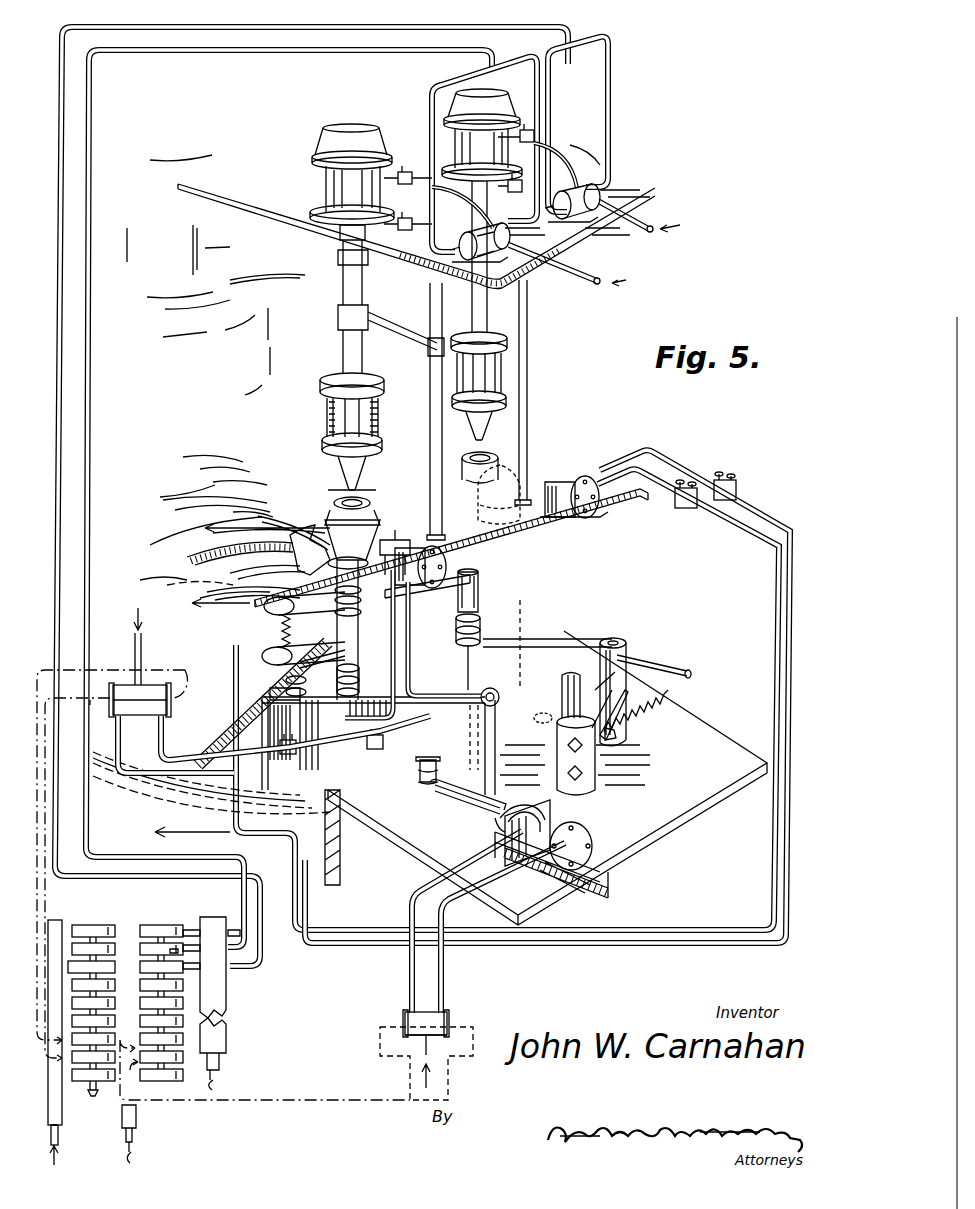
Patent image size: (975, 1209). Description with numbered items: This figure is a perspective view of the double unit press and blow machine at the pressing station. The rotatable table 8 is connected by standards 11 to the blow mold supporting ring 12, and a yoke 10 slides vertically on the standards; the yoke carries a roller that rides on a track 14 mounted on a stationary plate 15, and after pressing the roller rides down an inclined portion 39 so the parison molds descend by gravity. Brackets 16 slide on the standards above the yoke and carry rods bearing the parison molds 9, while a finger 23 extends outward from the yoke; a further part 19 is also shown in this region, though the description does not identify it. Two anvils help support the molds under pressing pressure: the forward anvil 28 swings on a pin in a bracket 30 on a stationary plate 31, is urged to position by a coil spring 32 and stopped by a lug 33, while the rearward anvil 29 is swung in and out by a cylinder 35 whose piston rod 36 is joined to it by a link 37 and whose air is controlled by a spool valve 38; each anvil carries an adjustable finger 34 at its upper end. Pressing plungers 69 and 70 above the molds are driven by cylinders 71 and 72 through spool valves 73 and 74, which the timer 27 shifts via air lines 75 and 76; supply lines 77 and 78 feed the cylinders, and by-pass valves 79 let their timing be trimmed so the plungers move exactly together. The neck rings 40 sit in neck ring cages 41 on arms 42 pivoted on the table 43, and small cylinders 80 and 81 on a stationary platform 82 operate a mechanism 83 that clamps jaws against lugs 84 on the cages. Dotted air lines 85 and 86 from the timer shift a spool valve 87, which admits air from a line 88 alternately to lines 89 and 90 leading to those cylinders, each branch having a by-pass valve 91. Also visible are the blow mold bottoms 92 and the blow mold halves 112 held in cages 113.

The table 8 is at (145, 812).
The parison molds 9 is at (312, 545).
The yoke 10 is at (389, 644).
The standards 11 is at (268, 708).
The blow mold supporting ring 12 is at (207, 582).
The track 14 is at (262, 692).
The stationary plate 15 is at (172, 780).
The brackets 16 is at (262, 606).
The spring 19 is at (278, 630).
The finger 23 is at (344, 717).
The timer 27 is at (152, 932).
The forward anvil 28 is at (588, 640).
The rearward anvil 29 is at (538, 665).
The bracket 30 is at (630, 740).
The stationary plate 31 is at (722, 738).
The coil spring 32 is at (665, 697).
The lug 33 is at (544, 712).
The finger 34 is at (335, 680).
The cylinder 35 is at (560, 820).
The piston rod 36 is at (495, 820).
The link 37 is at (440, 793).
The spool valve 38 is at (405, 1020).
The inclined portion 39 is at (252, 722).
The neck rings 40 is at (368, 495).
The neck ring cages 41 is at (359, 472).
The arms 42 is at (265, 460).
The table 43 is at (196, 540).
The pressing plunger 69 is at (330, 445).
The pressing plunger 70 is at (488, 425).
The cylinder 71 is at (325, 185).
The cylinder 72 is at (482, 211).
The spool valve 73 is at (480, 228).
The spool valve 74 is at (572, 190).
The air line 75 is at (90, 426).
The air line 76 is at (63, 368).
The line 77 is at (583, 286).
The line 78 is at (652, 241).
The by-pass valves 79 is at (418, 172).
The cylinder 80 is at (566, 482).
The cylinder 81 is at (448, 560).
The stationary platform 82 is at (580, 505).
The mechanism 83 is at (498, 512).
The lugs 84 is at (370, 505).
The air line 85 is at (115, 668).
The air line 86 is at (98, 705).
The spool valve 87 is at (152, 680).
The line 88 is at (146, 640).
The line 89 is at (128, 762).
The line 90 is at (162, 750).
The by-pass valve 91 is at (735, 482).
The blow mold bottoms 92 is at (231, 601).
The blow mold halves 112 is at (258, 539).
The cages 113 is at (256, 567).